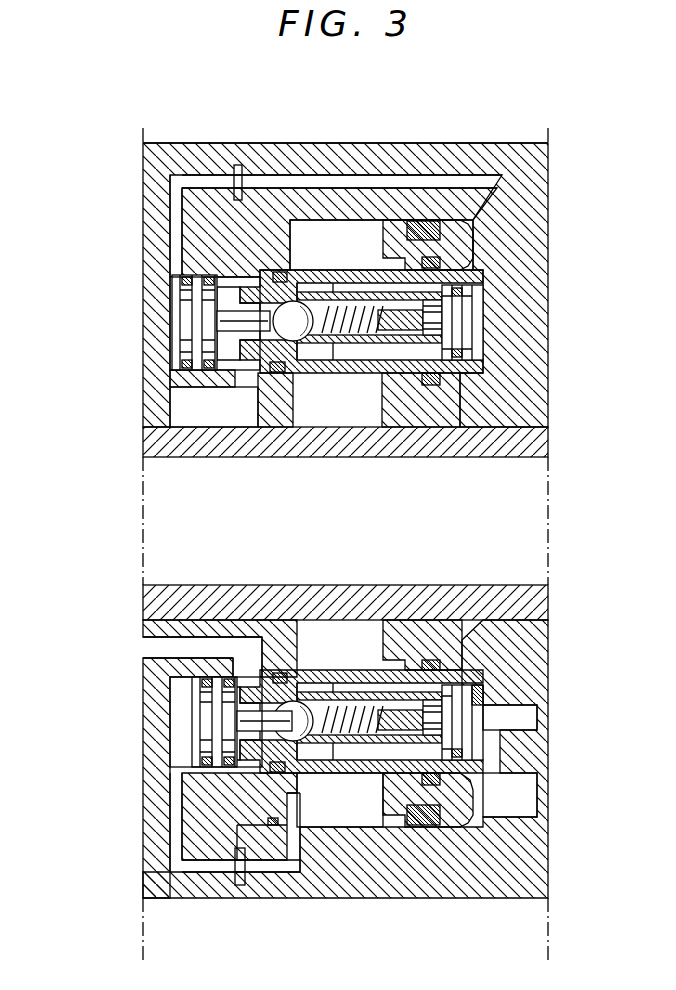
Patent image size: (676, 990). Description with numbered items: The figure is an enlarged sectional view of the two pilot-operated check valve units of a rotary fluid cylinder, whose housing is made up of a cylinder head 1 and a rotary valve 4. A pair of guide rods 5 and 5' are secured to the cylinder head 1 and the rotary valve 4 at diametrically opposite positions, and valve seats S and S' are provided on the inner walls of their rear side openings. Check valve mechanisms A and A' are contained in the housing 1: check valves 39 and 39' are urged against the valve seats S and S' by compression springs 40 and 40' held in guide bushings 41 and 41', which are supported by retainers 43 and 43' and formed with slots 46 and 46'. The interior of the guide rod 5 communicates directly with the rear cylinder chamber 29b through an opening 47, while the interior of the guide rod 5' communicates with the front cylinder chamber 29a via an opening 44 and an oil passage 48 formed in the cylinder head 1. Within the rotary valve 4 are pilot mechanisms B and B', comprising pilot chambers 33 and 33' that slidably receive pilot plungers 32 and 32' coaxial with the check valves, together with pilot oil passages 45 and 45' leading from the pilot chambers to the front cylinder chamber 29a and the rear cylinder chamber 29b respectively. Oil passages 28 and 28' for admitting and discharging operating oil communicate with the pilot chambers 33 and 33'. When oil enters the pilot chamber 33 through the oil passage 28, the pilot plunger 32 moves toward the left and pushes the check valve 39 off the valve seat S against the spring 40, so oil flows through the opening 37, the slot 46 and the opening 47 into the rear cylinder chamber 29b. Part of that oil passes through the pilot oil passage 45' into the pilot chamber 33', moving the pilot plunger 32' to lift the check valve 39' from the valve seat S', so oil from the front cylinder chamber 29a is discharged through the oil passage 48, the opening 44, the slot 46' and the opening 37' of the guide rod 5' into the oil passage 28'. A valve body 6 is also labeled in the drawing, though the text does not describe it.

The cylinder head 1 is at (512, 147).
The rotary valve 4 is at (222, 147).
The guide rod 5 is at (361, 232).
The valve body 6 is at (425, 400).
The oil passage 28 is at (159, 412).
The front cylinder chamber 29a is at (521, 246).
The rear cylinder chamber 29b is at (433, 182).
The pilot plunger 32 is at (165, 322).
The pilot chamber 33 is at (137, 304).
The opening 37 is at (227, 240).
The check valve 39 is at (293, 401).
The compression spring 40 is at (355, 404).
The guide bushing 41 is at (410, 401).
The retainer 43 is at (525, 322).
The opening 44 is at (472, 722).
The pilot oil passage 45 is at (388, 277).
The slot 46 is at (369, 392).
The opening 47 is at (332, 245).
The oil passage 48 is at (520, 800).
The check valve mechanism A is at (413, 158).
The pilot mechanism B is at (177, 381).
The valve seat S is at (223, 392).
The opening 37' is at (247, 658).
The check valve 39' is at (300, 643).
The compression spring 40' is at (368, 639).
The guide bushing 41' is at (416, 640).
The slot 46' is at (369, 652).
The oil passage 28' is at (160, 654).
The pilot plunger 32' is at (175, 722).
The pilot chamber 33' is at (146, 722).
The pilot mechanism B' is at (168, 746).
The valve seat S' is at (182, 779).
The pilot oil passage 45' is at (177, 774).
The retainer 43' is at (527, 730).
The check valve mechanism A' is at (336, 872).
The guide rod 5' is at (361, 818).